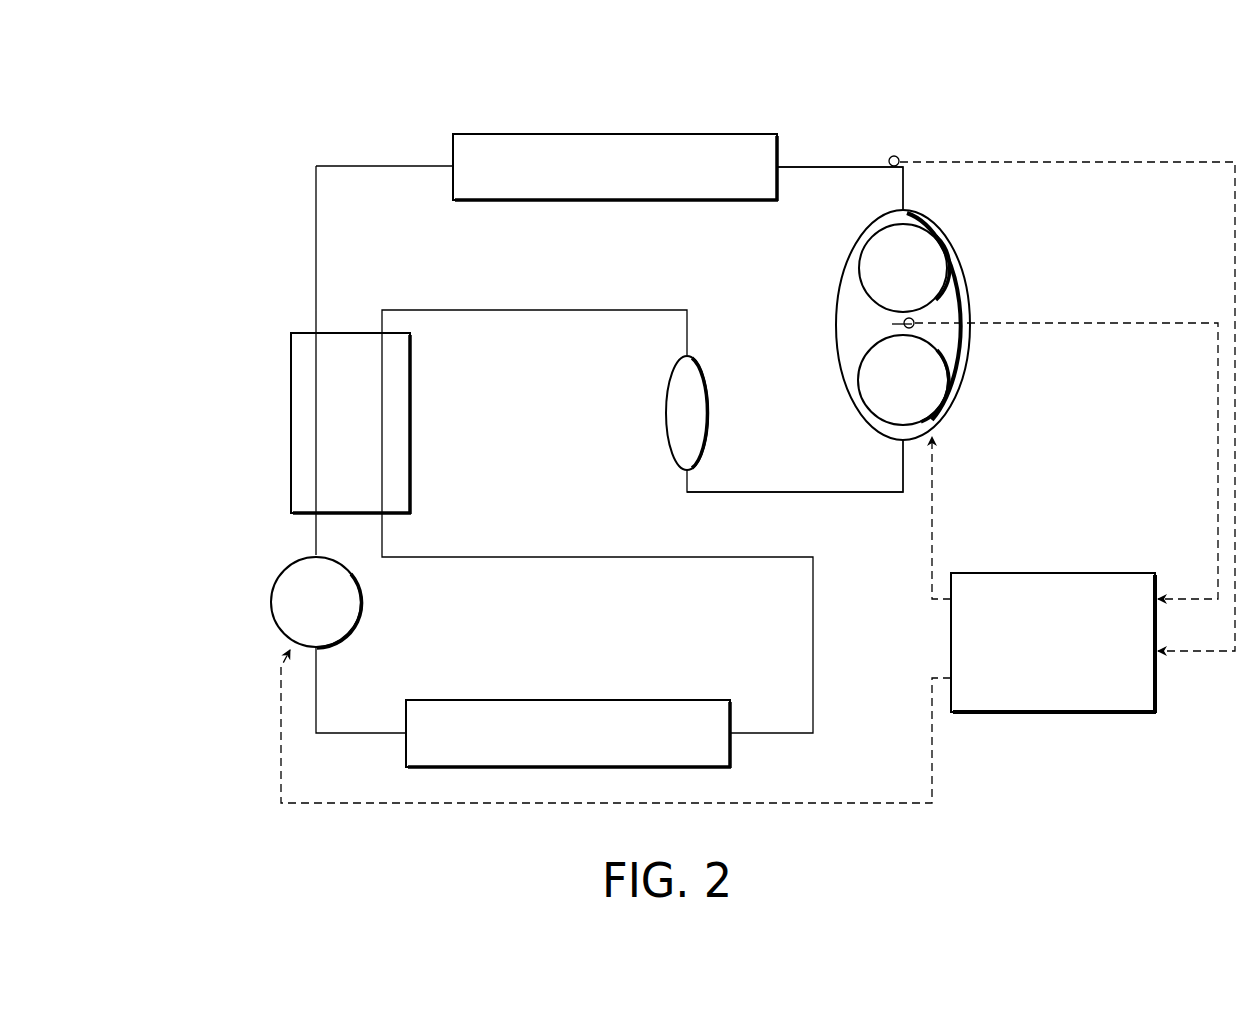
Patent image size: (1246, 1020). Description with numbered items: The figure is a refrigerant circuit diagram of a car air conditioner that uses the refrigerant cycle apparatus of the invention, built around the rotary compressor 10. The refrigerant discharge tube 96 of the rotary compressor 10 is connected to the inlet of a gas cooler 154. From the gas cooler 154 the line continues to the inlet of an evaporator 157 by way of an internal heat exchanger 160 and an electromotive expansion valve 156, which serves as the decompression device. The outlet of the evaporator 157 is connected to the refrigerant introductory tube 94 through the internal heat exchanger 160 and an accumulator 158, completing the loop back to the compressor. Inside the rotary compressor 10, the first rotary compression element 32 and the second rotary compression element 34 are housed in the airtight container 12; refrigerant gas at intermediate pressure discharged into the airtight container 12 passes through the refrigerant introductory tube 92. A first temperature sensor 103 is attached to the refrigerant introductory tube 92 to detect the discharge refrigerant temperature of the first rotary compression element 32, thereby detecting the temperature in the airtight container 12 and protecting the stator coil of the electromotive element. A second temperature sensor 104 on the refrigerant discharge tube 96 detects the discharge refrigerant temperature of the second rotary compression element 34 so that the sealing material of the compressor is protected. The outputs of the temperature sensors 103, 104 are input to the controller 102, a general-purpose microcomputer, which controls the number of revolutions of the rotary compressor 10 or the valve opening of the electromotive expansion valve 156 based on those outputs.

The rotary compressor 10 is at (935, 198).
The airtight container 12 is at (838, 330).
The first rotary compression element 32 is at (955, 393).
The second rotary compression element 34 is at (947, 270).
The refrigerant introductory tube 92 is at (898, 328).
The refrigerant introductory tube 94 is at (855, 493).
The refrigerant discharge tube 96 is at (825, 165).
The controller 102 is at (1157, 698).
The temperature sensor 103 is at (916, 323).
The temperature sensor 104 is at (893, 156).
The gas cooler 154 is at (594, 134).
The electromotive expansion valve 156 is at (270, 603).
The evaporator 157 is at (580, 700).
The accumulator 158 is at (666, 425).
The internal heat exchanger 160 is at (291, 390).